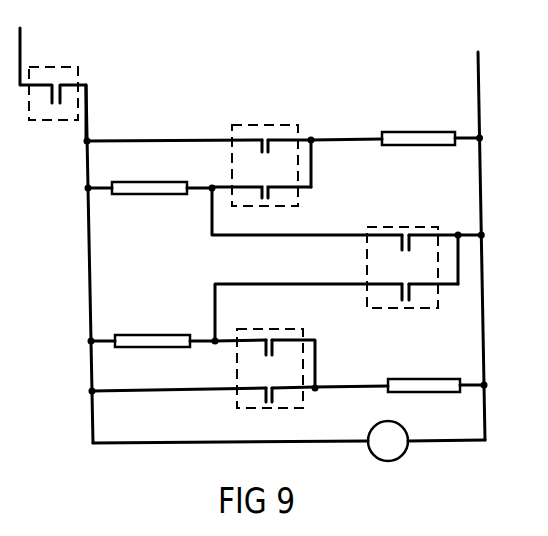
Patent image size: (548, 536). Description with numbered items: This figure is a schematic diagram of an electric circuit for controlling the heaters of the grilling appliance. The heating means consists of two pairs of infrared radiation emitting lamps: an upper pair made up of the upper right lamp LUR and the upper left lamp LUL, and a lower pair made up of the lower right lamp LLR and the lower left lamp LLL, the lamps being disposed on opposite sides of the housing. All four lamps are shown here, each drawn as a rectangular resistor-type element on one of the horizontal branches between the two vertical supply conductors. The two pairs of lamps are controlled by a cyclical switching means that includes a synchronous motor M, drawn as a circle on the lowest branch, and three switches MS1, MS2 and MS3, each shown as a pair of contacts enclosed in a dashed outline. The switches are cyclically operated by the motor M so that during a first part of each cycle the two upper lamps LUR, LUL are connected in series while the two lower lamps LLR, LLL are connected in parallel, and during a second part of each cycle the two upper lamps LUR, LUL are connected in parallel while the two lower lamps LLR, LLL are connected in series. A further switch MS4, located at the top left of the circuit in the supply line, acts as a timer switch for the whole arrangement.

The timer switch MS4 is at (53, 84).
The switch MS1 is at (261, 150).
The switch MS2 is at (402, 252).
The switch MS3 is at (270, 352).
The upper right lamp LUR is at (149, 172).
The upper left lamp LUL is at (418, 120).
The lower right lamp LLR is at (152, 327).
The lower left lamp LLL is at (424, 370).
The synchronous motor M is at (388, 441).